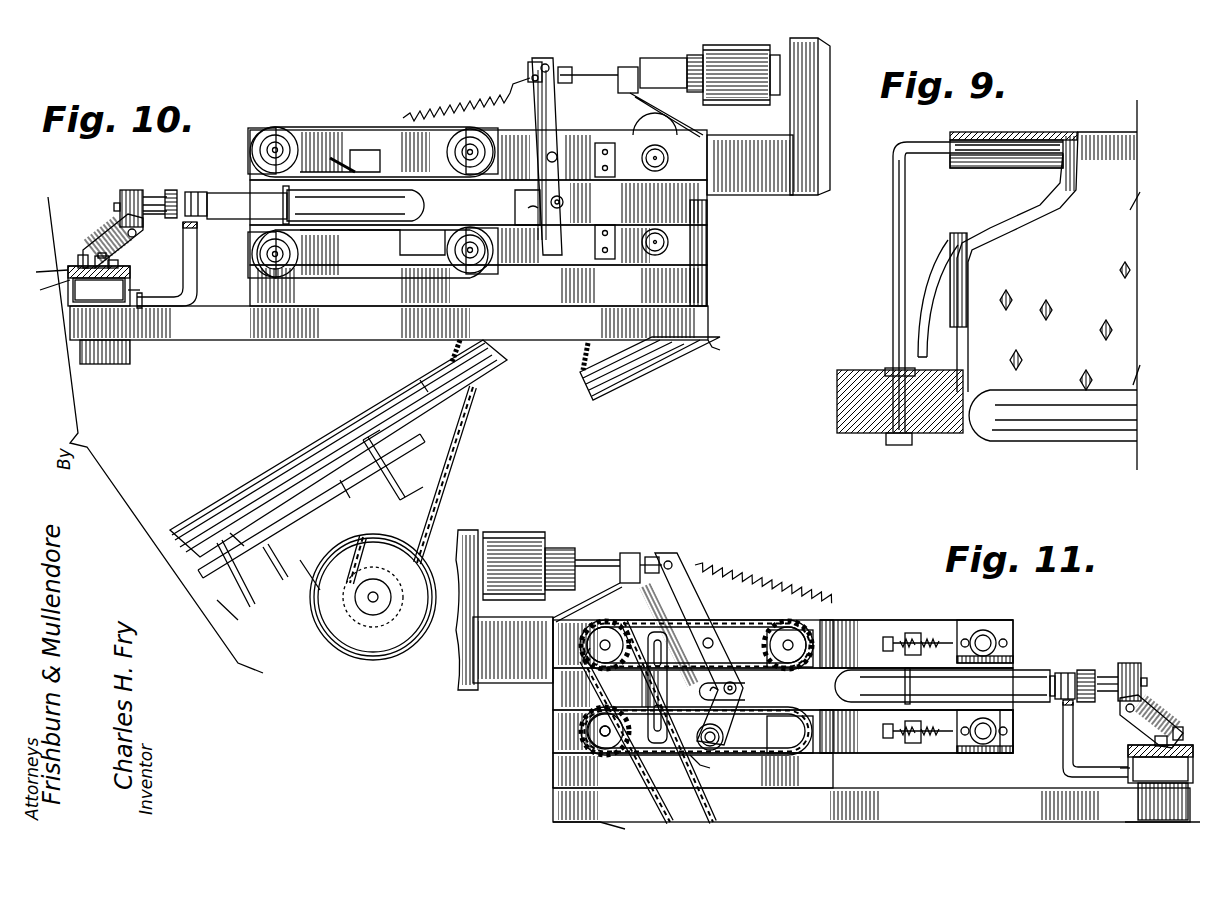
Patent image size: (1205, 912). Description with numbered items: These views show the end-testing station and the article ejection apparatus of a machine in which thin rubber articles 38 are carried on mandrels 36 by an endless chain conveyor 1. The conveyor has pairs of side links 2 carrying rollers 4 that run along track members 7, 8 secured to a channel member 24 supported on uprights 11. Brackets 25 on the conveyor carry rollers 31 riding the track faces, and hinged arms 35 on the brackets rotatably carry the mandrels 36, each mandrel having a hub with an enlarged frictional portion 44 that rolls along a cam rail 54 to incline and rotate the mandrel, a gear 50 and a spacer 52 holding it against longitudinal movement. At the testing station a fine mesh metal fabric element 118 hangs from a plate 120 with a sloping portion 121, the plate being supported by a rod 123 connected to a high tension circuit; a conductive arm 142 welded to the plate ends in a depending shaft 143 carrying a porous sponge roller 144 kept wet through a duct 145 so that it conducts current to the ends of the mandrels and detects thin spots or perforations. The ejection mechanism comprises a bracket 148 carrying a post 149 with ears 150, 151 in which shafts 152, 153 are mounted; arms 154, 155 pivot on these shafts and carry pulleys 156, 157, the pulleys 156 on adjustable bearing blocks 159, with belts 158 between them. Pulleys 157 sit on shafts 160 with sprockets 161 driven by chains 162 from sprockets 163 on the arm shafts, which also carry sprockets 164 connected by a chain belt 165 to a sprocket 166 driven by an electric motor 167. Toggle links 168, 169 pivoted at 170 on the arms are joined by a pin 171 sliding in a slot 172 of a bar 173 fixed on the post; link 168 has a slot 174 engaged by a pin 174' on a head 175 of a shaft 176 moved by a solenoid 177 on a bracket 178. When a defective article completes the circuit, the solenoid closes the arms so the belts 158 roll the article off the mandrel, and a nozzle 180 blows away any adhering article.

In FIG. 10, the endless conveyor 1 is at (45, 274).
In FIG. 9, the endless conveyor 1 is at (1135, 284).
In FIG. 10, the side bars or links 2 is at (99, 291).
In FIG. 10, the roller 4 is at (112, 266).
In FIG. 10, the track member 7 is at (47, 292).
In FIG. 11, the track member 7 is at (1187, 725).
In FIG. 10, the track member 8 is at (130, 270).
In FIG. 11, the track member 8 is at (1130, 750).
In FIG. 10, the uprights 11 is at (120, 355).
In FIG. 11, the uprights 11 is at (1135, 812).
In FIG. 10, the channel member 24 is at (70, 300).
In FIG. 11, the channel member 24 is at (1073, 775).
In FIG. 10, the bracket 25 is at (105, 235).
In FIG. 11, the bracket 25 is at (1135, 732).
In FIG. 10, the roller 31 is at (80, 255).
In FIG. 10, the arm 35 is at (133, 190).
In FIG. 11, the arm 35 is at (1133, 662).
In FIG. 10, the mandrel 36 is at (255, 190).
In FIG. 11, the mandrel 36 is at (1040, 660).
In FIG. 10, the rubber article 38 is at (420, 190).
In FIG. 9, the rubber article 38 is at (1085, 420).
In FIG. 11, the rubber article 38 is at (875, 672).
In FIG. 10, the enlarged portion 44 is at (196, 190).
In FIG. 11, the enlarged portion 44 is at (1068, 672).
In FIG. 10, the gear 50 is at (170, 190).
In FIG. 11, the gear 50 is at (1090, 670).
In FIG. 10, the spacer 52 is at (160, 216).
In FIG. 11, the spacer 52 is at (1110, 700).
In FIG. 10, the cam rail 54 is at (197, 235).
In FIG. 11, the cam rail 54 is at (1062, 718).
In FIG. 9, the element 118 is at (1125, 283).
In FIG. 9, the plate 120 is at (975, 120).
In FIG. 9, the downwardly extending portion 121 is at (963, 230).
In FIG. 9, the rod 123 is at (1045, 138).
In FIG. 9, the arm 142 is at (935, 140).
In FIG. 9, the shaft 143 is at (892, 262).
In FIG. 9, the roller 144 is at (899, 401).
In FIG. 9, the duct 145 is at (930, 270).
In FIG. 10, the bracket 148 is at (731, 346).
In FIG. 11, the bracket 148 is at (553, 822).
In FIG. 10, the post 149 is at (708, 288).
In FIG. 11, the post 149 is at (560, 793).
In FIG. 10, the ear 150 is at (722, 170).
In FIG. 11, the ear 150 is at (570, 638).
In FIG. 10, the ear 151 is at (700, 224).
In FIG. 11, the ear 151 is at (565, 719).
In FIG. 10, the shaft 152 is at (668, 158).
In FIG. 11, the shaft 152 is at (615, 635).
In FIG. 10, the shaft 153 is at (668, 242).
In FIG. 11, the shaft 153 is at (598, 738).
In FIG. 10, the arm 154 is at (505, 132).
In FIG. 11, the arm 154 is at (880, 622).
In FIG. 10, the arm 155 is at (505, 260).
In FIG. 11, the arm 155 is at (868, 748).
In FIG. 10, the pulley 156 is at (273, 128).
In FIG. 11, the pulley 156 is at (984, 628).
In FIG. 10, the pulley 157 is at (466, 99).
In FIG. 11, the pulley 157 is at (790, 598).
In FIG. 10, the belt 158 is at (333, 124).
In FIG. 11, the belt 158 is at (925, 620).
In FIG. 10, the bearing block 159 is at (248, 150).
In FIG. 11, the bearing block 159 is at (1015, 628).
In FIG. 10, the shaft 160 is at (455, 156).
In FIG. 11, the shaft 160 is at (880, 628).
In FIG. 11, the sprocket 161 is at (778, 635).
In FIG. 11, the chain 162 is at (722, 625).
In FIG. 11, the sprocket 163 is at (580, 652).
In FIG. 10, the sprocket 164 is at (478, 285).
In FIG. 11, the sprocket 164 is at (583, 733).
In FIG. 10, the chain belt 165 is at (450, 418).
In FIG. 11, the chain belt 165 is at (648, 775).
In FIG. 10, the sprocket 166 is at (340, 602).
In FIG. 10, the electric motor 167 is at (350, 640).
In FIG. 10, the toggle link 168 is at (555, 120).
In FIG. 11, the toggle link 168 is at (700, 640).
In FIG. 10, the toggle link 169 is at (389, 323).
In FIG. 11, the toggle link 169 is at (720, 769).
In FIG. 10, the pivot 170 is at (556, 154).
In FIG. 11, the pivot 170 is at (725, 748).
In FIG. 10, the pin 171 is at (563, 202).
In FIG. 11, the pin 171 is at (738, 687).
In FIG. 10, the slot 172 is at (525, 205).
In FIG. 11, the slot 172 is at (748, 690).
In FIG. 10, the bar 173 is at (528, 68).
In FIG. 11, the bar 173 is at (722, 730).
In FIG. 11, the slot 174 is at (704, 549).
In FIG. 10, the pin 174' is at (564, 50).
In FIG. 11, the pin 174' is at (691, 633).
In FIG. 10, the head 175 is at (595, 74).
In FIG. 11, the head 175 is at (653, 556).
In FIG. 10, the shaft 176 is at (623, 66).
In FIG. 11, the shaft 176 is at (598, 558).
In FIG. 10, the solenoid 177 is at (666, 58).
In FIG. 11, the solenoid 177 is at (545, 518).
In FIG. 10, the bracket 178 is at (818, 110).
In FIG. 11, the bracket 178 is at (458, 525).
In FIG. 10, the nozzle 180 is at (336, 155).